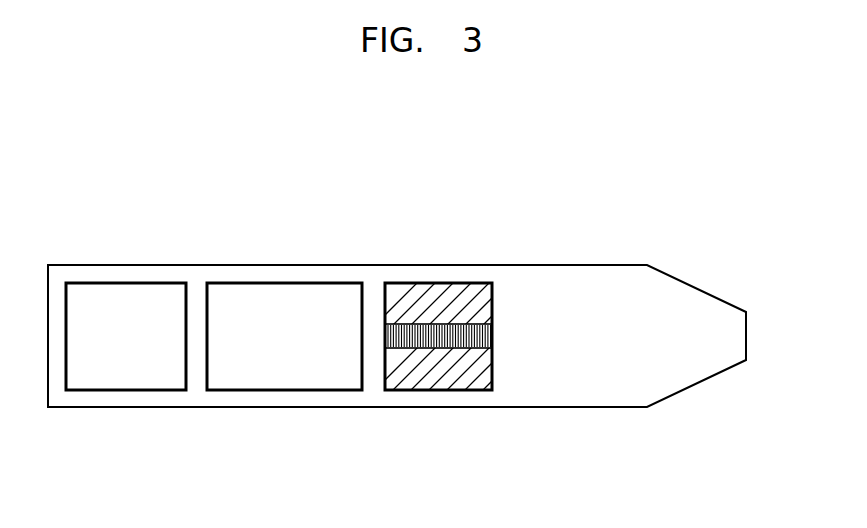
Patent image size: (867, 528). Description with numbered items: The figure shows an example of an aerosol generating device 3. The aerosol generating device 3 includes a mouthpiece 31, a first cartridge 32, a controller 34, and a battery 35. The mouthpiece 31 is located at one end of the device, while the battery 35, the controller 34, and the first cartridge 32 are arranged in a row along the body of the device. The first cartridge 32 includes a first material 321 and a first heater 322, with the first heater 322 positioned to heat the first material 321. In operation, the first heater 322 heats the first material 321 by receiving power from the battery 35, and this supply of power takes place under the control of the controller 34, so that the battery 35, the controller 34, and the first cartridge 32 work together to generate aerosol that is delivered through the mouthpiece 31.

The aerosol generating device 3 is at (682, 186).
The mouthpiece 31 is at (710, 308).
The first cartridge 32 is at (458, 334).
The first material 321 is at (457, 298).
The first heater 322 is at (417, 335).
The controller 34 is at (309, 390).
The battery 35 is at (137, 390).